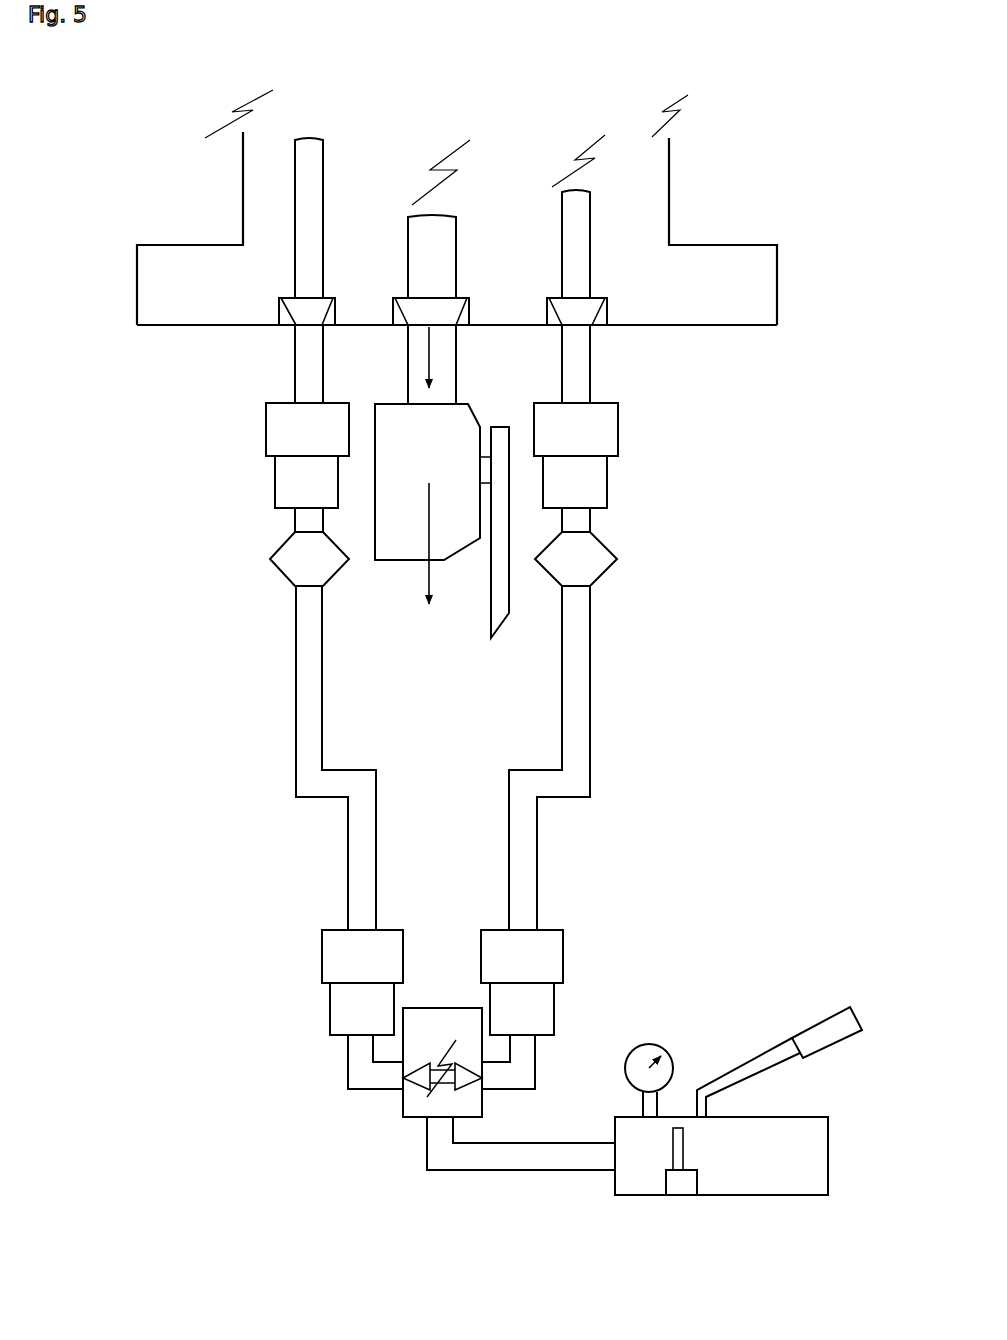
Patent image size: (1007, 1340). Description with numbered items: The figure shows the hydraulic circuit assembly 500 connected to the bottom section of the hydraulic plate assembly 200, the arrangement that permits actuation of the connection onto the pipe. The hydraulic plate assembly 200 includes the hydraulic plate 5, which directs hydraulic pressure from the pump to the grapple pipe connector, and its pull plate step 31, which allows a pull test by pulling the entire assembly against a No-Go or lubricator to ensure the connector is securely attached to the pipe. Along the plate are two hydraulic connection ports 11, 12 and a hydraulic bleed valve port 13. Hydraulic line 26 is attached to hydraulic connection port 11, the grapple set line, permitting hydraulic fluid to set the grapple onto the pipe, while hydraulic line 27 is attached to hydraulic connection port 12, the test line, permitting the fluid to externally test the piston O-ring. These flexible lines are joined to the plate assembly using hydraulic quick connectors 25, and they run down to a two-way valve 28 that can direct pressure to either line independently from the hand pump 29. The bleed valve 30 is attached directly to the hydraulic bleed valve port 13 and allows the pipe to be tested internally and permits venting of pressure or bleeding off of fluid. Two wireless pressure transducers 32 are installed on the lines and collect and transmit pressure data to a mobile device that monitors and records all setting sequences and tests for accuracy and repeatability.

The hydraulic plate assembly 200 is at (457, 186).
The pull plate step 31 is at (177, 235).
The hydraulic plate 5 is at (683, 197).
The hydraulic connection port 11 is at (267, 307).
The hydraulic connection port 12 is at (605, 298).
The hydraulic bleed valve port 13 is at (473, 290).
The hydraulic quick connector 25 is at (263, 432).
The wireless pressure transducer 32 is at (275, 550).
The bleed valve 30 is at (442, 481).
The hydraulic line 26 is at (293, 638).
The hydraulic line 27 is at (600, 638).
The two-way valve 28 is at (400, 1110).
The hydraulic circuit assembly 500 is at (481, 1101).
The hand pump 29 is at (659, 1045).